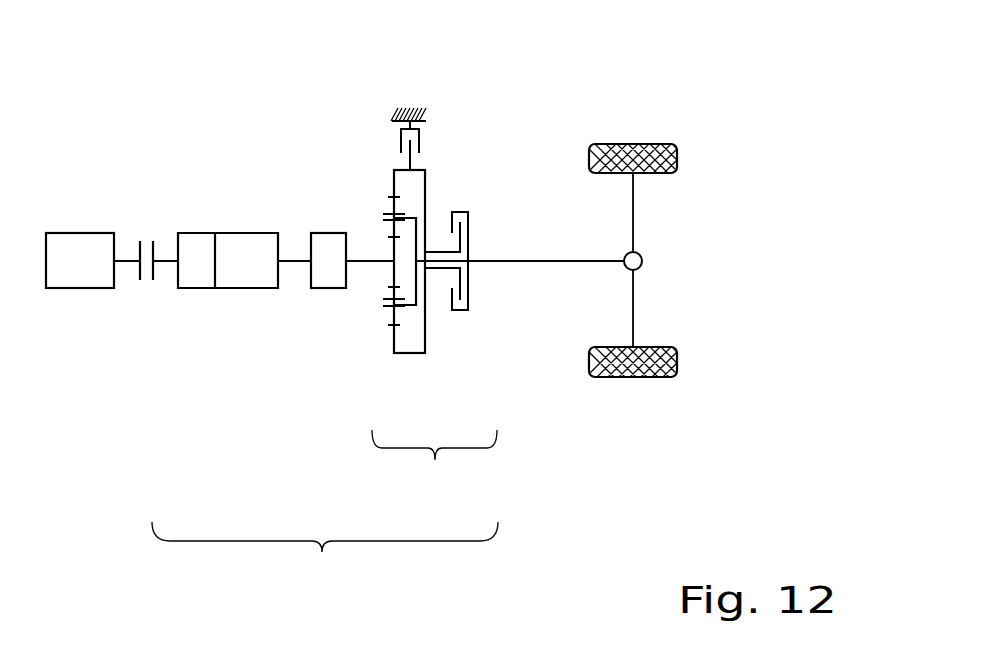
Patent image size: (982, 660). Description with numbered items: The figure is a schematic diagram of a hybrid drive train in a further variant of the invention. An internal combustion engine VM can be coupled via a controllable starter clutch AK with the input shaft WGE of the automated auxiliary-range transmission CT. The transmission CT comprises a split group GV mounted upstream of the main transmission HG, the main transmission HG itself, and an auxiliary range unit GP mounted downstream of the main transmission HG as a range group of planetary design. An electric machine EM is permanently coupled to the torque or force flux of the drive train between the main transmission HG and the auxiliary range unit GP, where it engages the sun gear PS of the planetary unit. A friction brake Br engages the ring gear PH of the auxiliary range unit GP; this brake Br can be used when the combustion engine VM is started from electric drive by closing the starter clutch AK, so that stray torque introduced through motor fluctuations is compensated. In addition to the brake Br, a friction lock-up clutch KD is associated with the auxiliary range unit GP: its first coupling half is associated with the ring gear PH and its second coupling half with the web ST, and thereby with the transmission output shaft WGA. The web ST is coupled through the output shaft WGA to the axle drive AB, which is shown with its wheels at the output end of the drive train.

The internal combustion engine VM is at (66, 233).
The starter clutch AK is at (147, 243).
The input shaft WGE is at (165, 263).
The split group GV is at (197, 288).
The main transmission HG is at (247, 288).
The electric machine EM is at (328, 233).
The friction brake Br is at (401, 138).
The ring gear PH is at (426, 180).
The web ST is at (408, 215).
The sun gear PS is at (393, 270).
The auxiliary range unit GP is at (434, 468).
The friction lock-up clutch KD is at (458, 313).
The transmission output shaft WGA is at (550, 262).
The axle drive AB is at (634, 155).
The automated auxiliary-range transmission CT is at (325, 560).